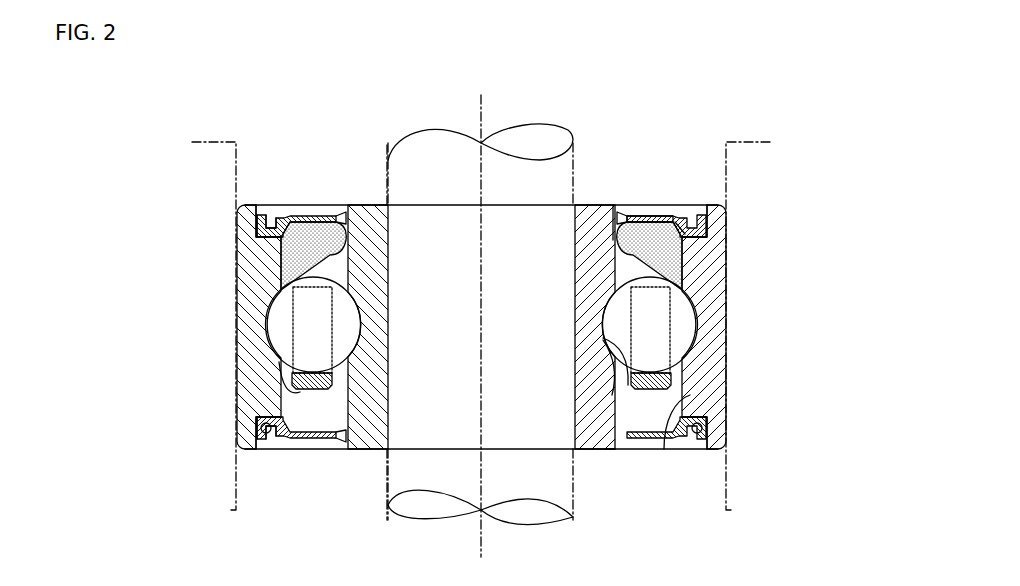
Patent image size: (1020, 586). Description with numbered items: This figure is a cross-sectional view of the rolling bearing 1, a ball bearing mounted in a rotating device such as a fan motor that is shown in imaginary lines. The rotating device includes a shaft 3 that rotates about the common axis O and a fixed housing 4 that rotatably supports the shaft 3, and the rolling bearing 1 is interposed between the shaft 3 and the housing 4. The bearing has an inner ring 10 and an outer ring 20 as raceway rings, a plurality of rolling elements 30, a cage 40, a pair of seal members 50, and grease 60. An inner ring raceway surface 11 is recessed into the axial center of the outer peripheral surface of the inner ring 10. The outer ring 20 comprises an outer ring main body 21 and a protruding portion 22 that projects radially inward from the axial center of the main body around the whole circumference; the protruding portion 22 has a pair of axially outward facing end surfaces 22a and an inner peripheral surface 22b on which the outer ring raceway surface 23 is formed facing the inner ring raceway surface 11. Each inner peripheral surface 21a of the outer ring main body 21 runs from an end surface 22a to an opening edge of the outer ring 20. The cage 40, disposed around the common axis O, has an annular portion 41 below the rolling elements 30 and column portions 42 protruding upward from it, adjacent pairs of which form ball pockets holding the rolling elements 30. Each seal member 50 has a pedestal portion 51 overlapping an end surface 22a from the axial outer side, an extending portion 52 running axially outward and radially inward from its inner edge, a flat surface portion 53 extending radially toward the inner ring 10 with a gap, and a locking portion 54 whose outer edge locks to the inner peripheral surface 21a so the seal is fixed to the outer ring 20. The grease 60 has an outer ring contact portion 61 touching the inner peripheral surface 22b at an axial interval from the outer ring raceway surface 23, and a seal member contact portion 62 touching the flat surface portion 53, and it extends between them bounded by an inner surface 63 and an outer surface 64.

The rolling bearing 1 is at (778, 131).
The common axis O is at (472, 112).
The shaft 3 is at (386, 182).
The housing 4 is at (200, 140).
The inner ring 10 is at (568, 257).
The inner ring raceway surface 11 is at (604, 446).
The outer ring 20 is at (731, 250).
The outer ring main body 21 is at (713, 222).
The inner peripheral surface 21a is at (713, 210).
The protruding portion 22 is at (657, 443).
The end surface 22a is at (700, 215).
The inner peripheral surface 22b is at (688, 392).
The outer ring raceway surface 23 is at (686, 330).
The rolling element 30 is at (688, 312).
The cage 40 is at (280, 375).
The annular portion 41 is at (293, 381).
The column portion 42 is at (298, 326).
The seal member 50 is at (305, 215).
The pedestal portion 51 is at (262, 215).
The extending portion 52 is at (270, 218).
The flat surface portion 53 is at (338, 220).
The locking portion 54 is at (252, 222).
The grease 60 is at (290, 252).
The outer ring contact portion 61 is at (700, 270).
The seal member contact portion 62 is at (640, 215).
The inner surface 63 is at (612, 237).
The outer surface 64 is at (668, 220).